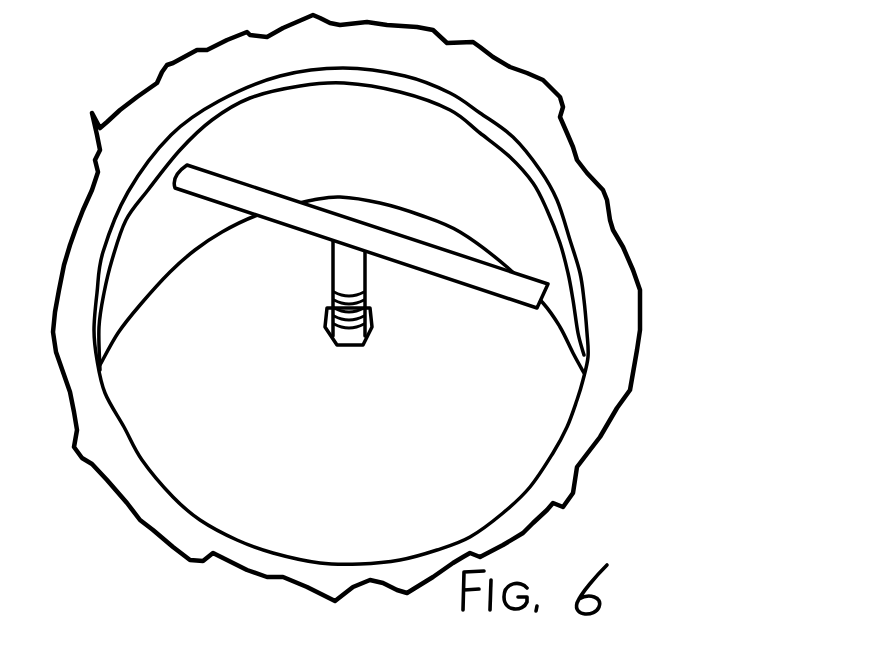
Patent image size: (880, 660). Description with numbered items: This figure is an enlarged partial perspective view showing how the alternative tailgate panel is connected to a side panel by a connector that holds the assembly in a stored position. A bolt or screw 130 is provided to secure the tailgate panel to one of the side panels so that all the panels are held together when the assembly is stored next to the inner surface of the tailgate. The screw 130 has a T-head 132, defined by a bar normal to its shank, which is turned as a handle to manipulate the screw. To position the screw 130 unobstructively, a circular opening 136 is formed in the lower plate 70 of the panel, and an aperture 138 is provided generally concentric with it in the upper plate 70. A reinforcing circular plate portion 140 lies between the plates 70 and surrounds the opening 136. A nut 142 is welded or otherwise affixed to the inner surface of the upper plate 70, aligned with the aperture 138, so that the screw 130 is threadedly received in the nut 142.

The plate 70 is at (686, 287).
The bolt or screw 130 is at (442, 346).
The T-head 132 is at (203, 180).
The circular opening 136 is at (593, 147).
The aperture 138 is at (326, 334).
The reinforcing circular plate portion 140 is at (693, 210).
The nut 142 is at (378, 372).